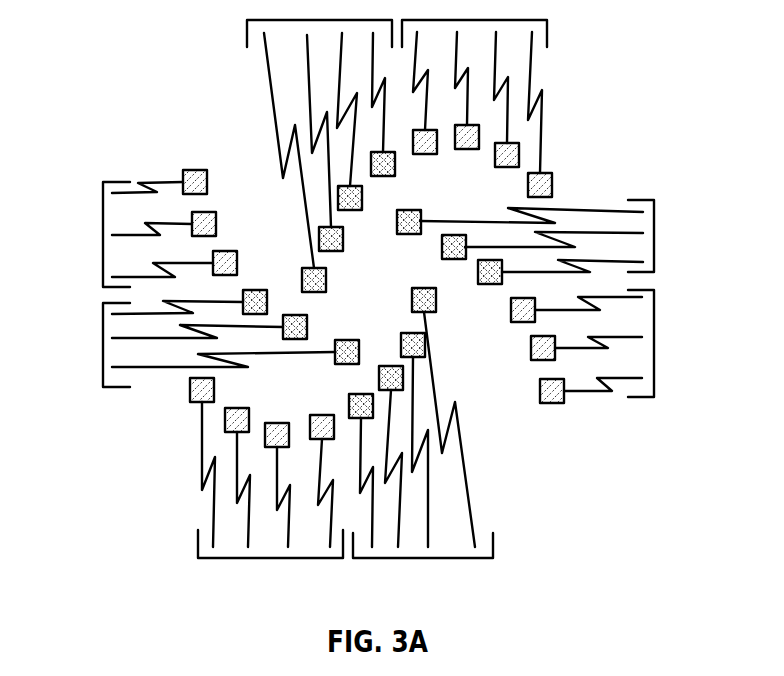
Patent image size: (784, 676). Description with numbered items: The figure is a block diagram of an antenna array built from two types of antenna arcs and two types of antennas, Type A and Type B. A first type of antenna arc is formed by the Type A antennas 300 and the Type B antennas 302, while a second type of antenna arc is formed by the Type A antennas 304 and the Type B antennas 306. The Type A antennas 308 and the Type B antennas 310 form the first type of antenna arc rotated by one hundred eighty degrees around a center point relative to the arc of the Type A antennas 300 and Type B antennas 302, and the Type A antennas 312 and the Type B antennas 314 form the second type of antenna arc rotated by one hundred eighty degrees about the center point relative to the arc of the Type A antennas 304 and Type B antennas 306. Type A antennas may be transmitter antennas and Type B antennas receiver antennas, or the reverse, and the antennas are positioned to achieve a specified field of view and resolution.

The Type A antennas 300 is at (100, 237).
The Type B antennas 302 is at (100, 345).
The Type A antennas 304 is at (198, 547).
The Type B antennas 306 is at (493, 547).
The Type A antennas 308 is at (655, 343).
The Type B antennas 310 is at (655, 238).
The Type A antennas 312 is at (547, 32).
The Type B antennas 314 is at (247, 33).